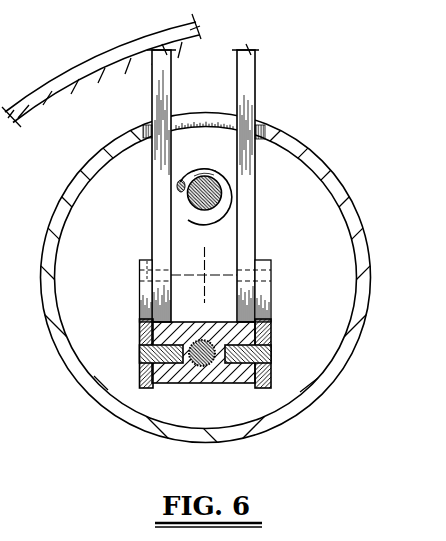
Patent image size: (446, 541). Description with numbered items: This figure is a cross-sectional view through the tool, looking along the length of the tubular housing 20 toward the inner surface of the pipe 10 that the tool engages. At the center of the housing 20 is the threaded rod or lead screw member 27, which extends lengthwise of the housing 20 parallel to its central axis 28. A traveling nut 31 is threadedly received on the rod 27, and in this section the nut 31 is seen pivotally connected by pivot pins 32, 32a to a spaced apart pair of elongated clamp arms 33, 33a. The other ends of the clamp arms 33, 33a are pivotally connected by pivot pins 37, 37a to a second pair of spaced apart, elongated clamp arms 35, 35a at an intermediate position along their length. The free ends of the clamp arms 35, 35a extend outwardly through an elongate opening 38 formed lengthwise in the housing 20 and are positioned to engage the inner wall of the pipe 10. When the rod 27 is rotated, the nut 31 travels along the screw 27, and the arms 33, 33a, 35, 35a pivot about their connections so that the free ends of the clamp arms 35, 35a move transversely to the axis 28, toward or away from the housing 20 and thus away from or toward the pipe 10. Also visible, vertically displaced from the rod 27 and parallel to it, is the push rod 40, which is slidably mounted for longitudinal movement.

The pipe 10 is at (82, 52).
The tubular housing 20 is at (320, 157).
The threaded rod or lead screw member 27 is at (198, 361).
The central axis 28 is at (206, 274).
The traveling nut 31 is at (235, 329).
The pivot pin 32 is at (272, 357).
The pivot pin 32a is at (140, 357).
The clamp arm 33 is at (272, 340).
The clamp arm 33a is at (141, 325).
The clamp arm 35 is at (246, 100).
The clamp arm 35a is at (160, 91).
The pivot pin 37 is at (270, 262).
The pivot pin 37a is at (143, 262).
The elongate opening 38 is at (150, 119).
The push rod 40 is at (190, 199).